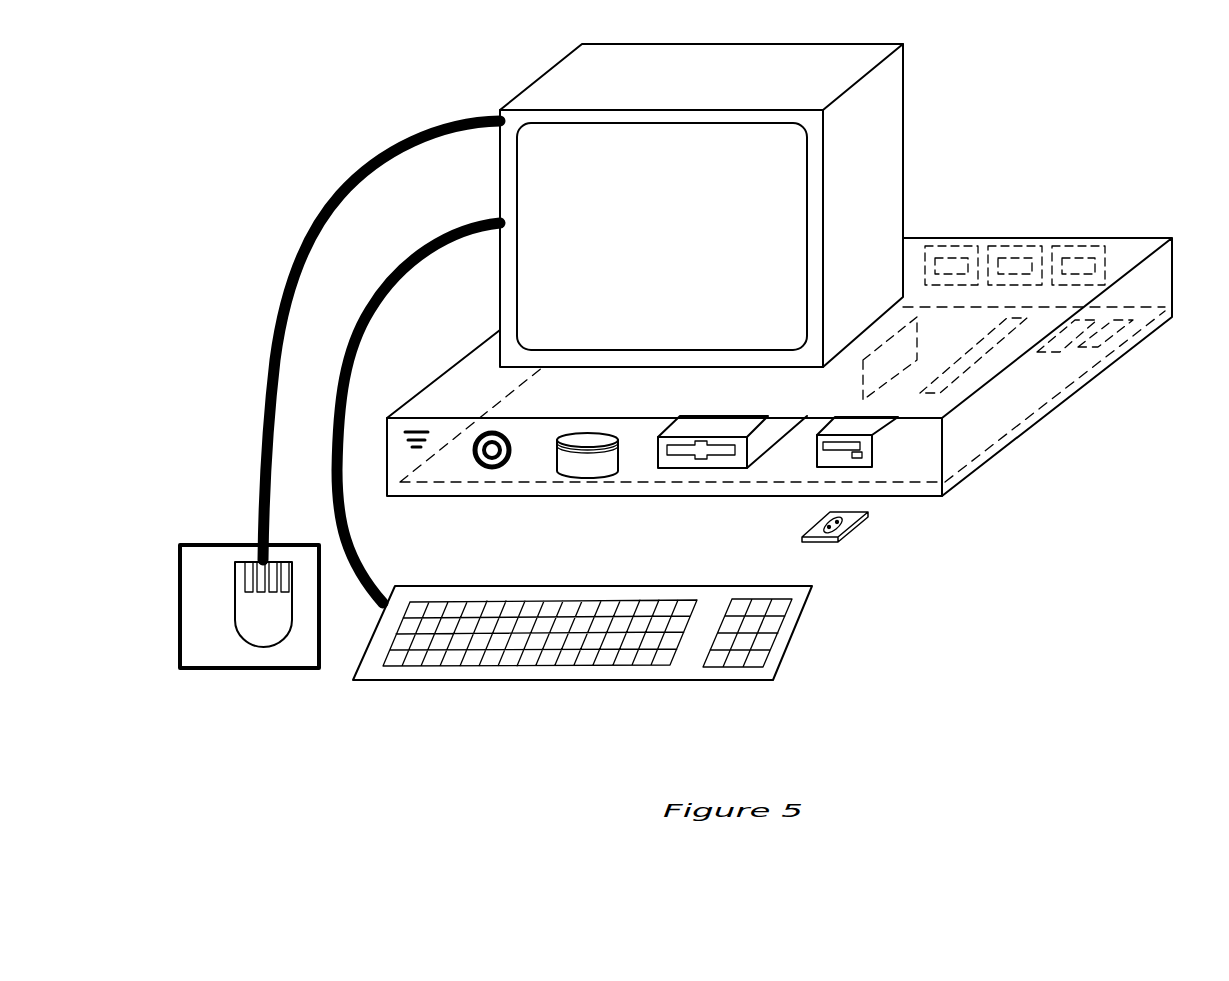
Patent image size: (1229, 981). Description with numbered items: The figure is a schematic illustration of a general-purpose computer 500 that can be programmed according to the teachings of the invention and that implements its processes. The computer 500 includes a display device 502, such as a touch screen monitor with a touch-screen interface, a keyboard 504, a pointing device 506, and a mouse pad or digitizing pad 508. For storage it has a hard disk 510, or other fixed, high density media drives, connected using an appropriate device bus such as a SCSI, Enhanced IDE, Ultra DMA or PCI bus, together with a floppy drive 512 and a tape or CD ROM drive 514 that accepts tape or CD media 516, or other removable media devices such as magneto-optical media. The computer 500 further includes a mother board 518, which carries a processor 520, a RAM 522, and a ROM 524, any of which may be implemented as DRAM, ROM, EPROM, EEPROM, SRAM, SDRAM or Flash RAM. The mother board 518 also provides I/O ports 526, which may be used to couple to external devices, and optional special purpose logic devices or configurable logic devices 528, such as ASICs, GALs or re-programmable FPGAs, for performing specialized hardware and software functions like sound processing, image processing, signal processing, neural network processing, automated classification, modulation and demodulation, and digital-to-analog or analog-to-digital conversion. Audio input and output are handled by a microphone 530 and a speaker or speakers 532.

The general-purpose computer 500 is at (1073, 673).
The display device 502 is at (904, 138).
The keyboard 504 is at (788, 638).
The pointing device 506 is at (257, 648).
The mouse pad or digitizing pad 508 is at (215, 545).
The hard disk 510 is at (578, 478).
The floppy drive 512 is at (686, 470).
The tape or CD ROM drive 514 is at (878, 442).
The tape or CD media 516 is at (843, 533).
The mother board 518 is at (1145, 325).
The processor 520 is at (945, 390).
The RAM 522 is at (1003, 342).
The ROM 524 is at (1078, 345).
The I/O ports 526 is at (1006, 243).
The special purpose logic devices or configurable logic devices 528 is at (863, 368).
The microphone 530 is at (412, 455).
The speaker 532 is at (488, 470).